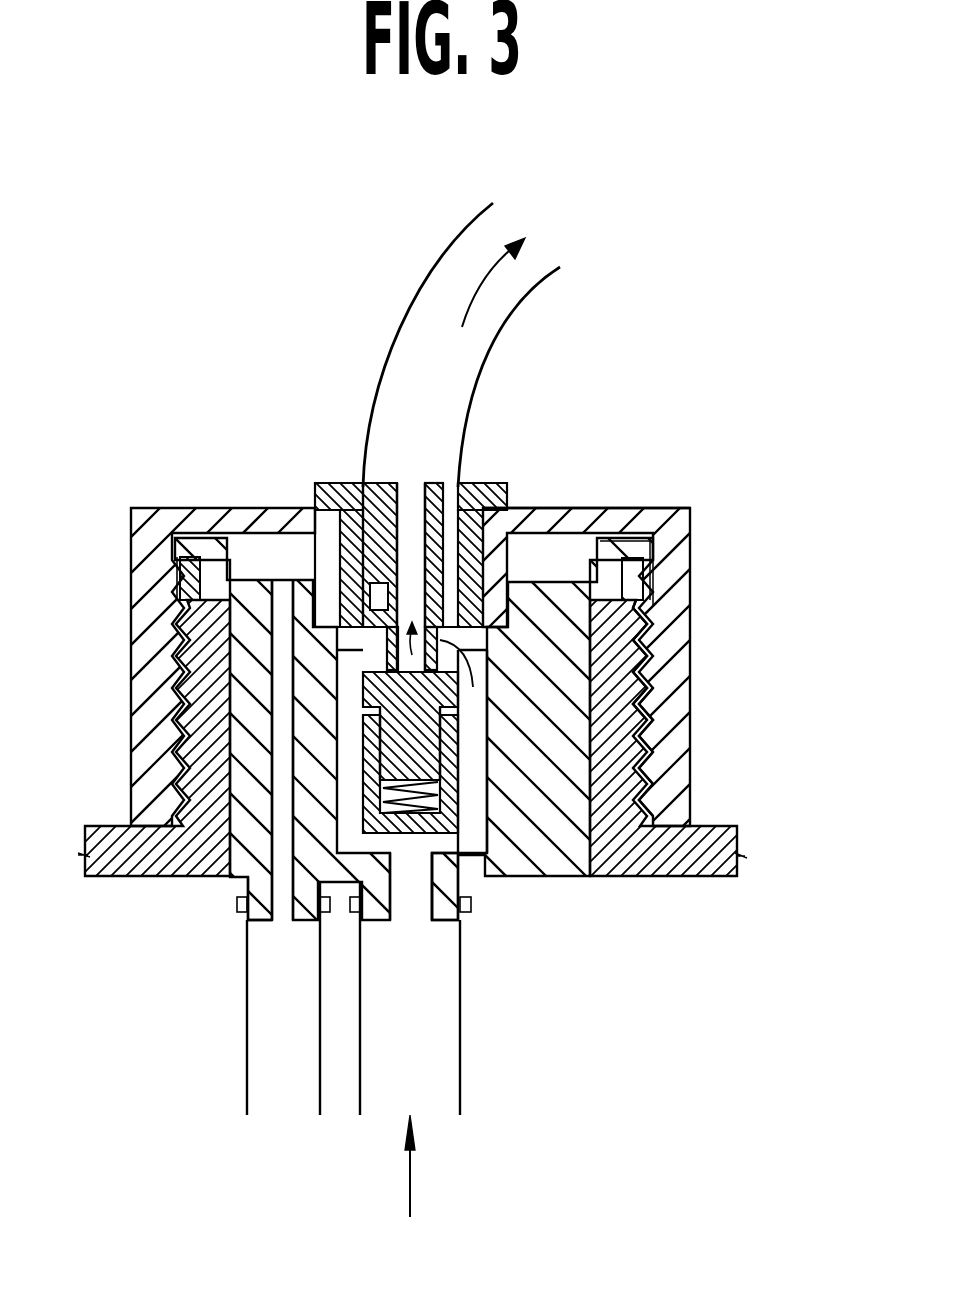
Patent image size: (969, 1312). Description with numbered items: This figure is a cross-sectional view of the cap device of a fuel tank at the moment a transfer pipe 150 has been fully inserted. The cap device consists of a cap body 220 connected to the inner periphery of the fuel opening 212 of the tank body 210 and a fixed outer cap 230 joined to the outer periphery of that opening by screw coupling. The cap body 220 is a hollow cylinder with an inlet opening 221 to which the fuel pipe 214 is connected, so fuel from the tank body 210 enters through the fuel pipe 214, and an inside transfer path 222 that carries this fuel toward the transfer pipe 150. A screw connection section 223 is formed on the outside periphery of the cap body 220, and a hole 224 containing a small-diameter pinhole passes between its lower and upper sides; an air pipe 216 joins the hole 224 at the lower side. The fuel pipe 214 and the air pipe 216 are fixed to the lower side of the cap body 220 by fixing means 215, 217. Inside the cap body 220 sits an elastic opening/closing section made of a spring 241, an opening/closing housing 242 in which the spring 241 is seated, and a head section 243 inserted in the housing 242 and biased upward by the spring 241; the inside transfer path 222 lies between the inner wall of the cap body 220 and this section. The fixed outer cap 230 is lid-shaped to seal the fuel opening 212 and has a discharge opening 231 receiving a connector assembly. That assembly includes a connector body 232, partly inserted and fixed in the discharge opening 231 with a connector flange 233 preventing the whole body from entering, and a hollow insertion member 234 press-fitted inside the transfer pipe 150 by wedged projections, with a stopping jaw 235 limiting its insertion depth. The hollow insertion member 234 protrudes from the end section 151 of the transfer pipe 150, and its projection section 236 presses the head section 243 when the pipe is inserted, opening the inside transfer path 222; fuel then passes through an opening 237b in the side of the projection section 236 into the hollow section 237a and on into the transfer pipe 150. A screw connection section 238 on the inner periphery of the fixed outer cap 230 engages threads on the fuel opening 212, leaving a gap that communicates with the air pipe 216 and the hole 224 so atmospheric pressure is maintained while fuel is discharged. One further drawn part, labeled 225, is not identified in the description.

The transfer pipe 150 is at (453, 280).
The end section 151 is at (556, 636).
The tank body 210 is at (745, 831).
The fuel opening 212 is at (655, 727).
The fuel pipe 214 is at (452, 1073).
The fixing means 215 is at (465, 920).
The air pipe 216 is at (258, 1073).
The fixing means 217 is at (245, 925).
The cap body 220 is at (640, 637).
The inlet opening 221 is at (410, 925).
The inside transfer path 222 is at (473, 842).
The screw connection section 223 is at (655, 682).
The hole 224 is at (283, 925).
The sealing member 225 is at (177, 562).
The fixed outer cap 230 is at (703, 531).
The discharge opening 231 is at (583, 510).
The connector body 232 is at (345, 520).
The connector flange 233 is at (503, 487).
The hollow insertion member 234 is at (382, 487).
The stopping jaw 235 is at (335, 575).
The projection section 236 is at (372, 668).
The hollow section 237a is at (412, 487).
The opening 237b is at (385, 652).
The screw connection section 238 is at (655, 762).
The spring 241 is at (362, 795).
The opening/closing housing 242 is at (378, 755).
The head section 243 is at (362, 705).